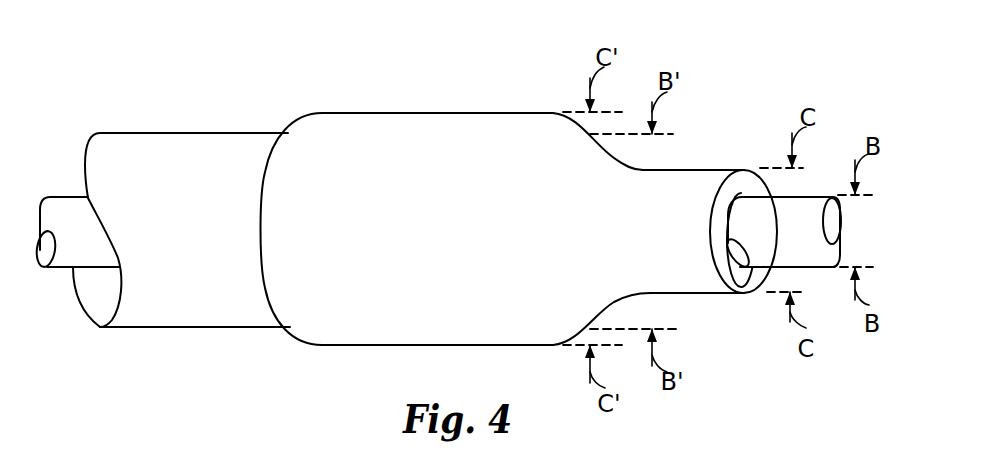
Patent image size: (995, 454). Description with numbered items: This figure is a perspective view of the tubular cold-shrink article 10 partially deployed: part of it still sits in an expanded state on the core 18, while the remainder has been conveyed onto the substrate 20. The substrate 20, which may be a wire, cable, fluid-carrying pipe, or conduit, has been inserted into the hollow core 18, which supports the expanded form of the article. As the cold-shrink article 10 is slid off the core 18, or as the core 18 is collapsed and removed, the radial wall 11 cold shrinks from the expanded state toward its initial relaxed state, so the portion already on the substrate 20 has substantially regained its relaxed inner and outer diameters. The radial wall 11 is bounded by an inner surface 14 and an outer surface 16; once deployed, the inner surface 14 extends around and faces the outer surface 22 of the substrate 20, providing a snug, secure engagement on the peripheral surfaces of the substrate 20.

The cold-shrink article 10 is at (400, 82).
The radial wall 11 is at (741, 182).
The inner surface 14 is at (748, 270).
The outer surface 16 is at (703, 280).
The core 18 is at (188, 313).
The substrate 20 is at (49, 178).
The outer surface of the substrate 22 is at (72, 252).